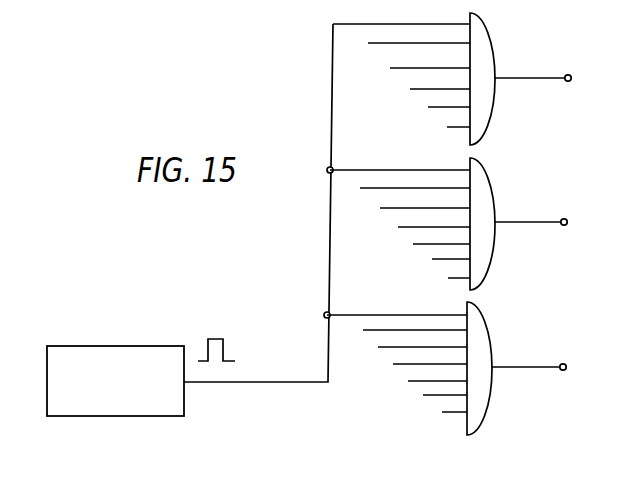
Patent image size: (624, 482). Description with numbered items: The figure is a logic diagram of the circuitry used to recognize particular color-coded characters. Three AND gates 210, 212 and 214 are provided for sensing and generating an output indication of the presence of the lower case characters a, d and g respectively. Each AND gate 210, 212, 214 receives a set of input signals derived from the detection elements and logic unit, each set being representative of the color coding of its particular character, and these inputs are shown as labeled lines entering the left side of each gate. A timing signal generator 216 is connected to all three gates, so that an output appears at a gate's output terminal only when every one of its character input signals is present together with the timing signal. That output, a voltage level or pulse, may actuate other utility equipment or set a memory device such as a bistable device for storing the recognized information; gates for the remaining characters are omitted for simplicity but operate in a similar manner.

The AND gate 210 is at (493, 53).
The AND gate 212 is at (494, 204).
The AND gate 214 is at (493, 350).
The timing signal generator 216 is at (92, 346).